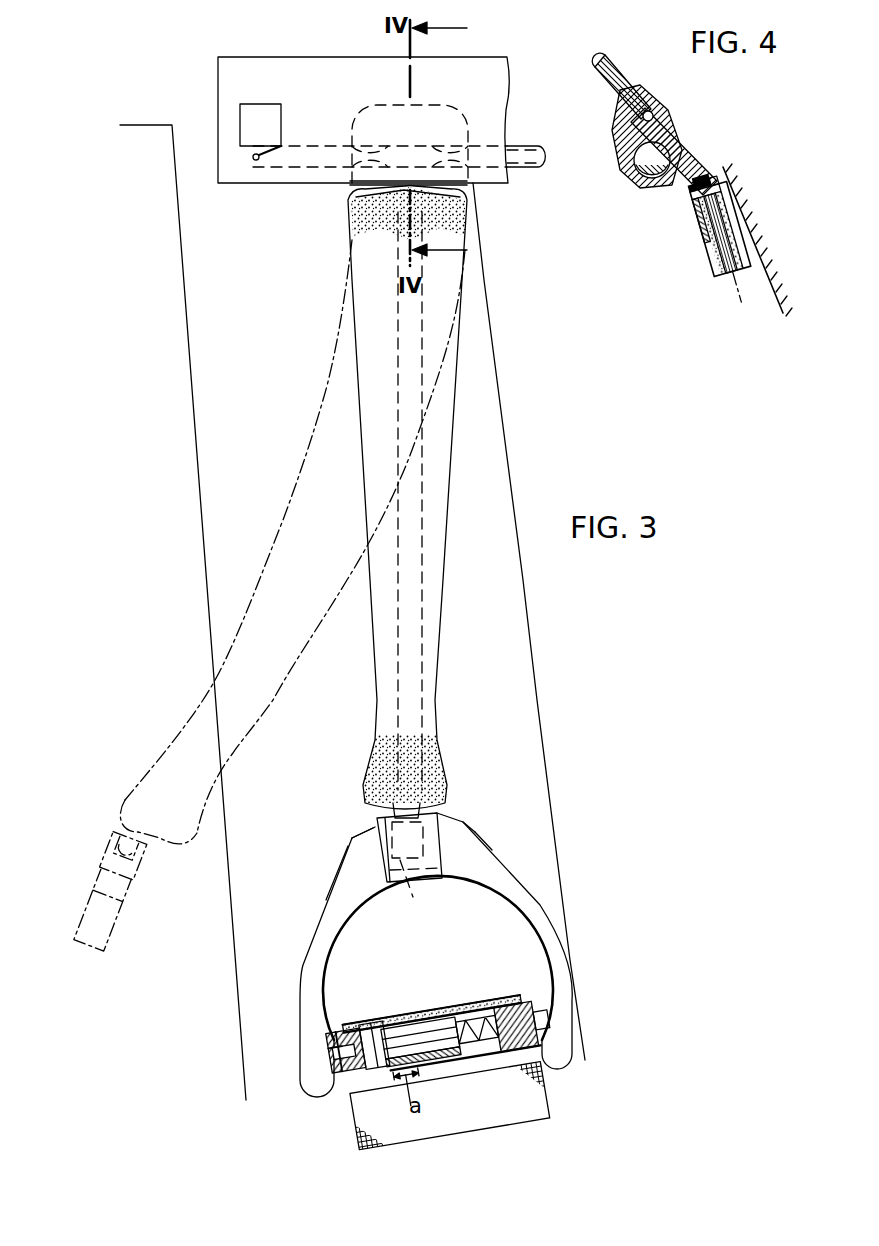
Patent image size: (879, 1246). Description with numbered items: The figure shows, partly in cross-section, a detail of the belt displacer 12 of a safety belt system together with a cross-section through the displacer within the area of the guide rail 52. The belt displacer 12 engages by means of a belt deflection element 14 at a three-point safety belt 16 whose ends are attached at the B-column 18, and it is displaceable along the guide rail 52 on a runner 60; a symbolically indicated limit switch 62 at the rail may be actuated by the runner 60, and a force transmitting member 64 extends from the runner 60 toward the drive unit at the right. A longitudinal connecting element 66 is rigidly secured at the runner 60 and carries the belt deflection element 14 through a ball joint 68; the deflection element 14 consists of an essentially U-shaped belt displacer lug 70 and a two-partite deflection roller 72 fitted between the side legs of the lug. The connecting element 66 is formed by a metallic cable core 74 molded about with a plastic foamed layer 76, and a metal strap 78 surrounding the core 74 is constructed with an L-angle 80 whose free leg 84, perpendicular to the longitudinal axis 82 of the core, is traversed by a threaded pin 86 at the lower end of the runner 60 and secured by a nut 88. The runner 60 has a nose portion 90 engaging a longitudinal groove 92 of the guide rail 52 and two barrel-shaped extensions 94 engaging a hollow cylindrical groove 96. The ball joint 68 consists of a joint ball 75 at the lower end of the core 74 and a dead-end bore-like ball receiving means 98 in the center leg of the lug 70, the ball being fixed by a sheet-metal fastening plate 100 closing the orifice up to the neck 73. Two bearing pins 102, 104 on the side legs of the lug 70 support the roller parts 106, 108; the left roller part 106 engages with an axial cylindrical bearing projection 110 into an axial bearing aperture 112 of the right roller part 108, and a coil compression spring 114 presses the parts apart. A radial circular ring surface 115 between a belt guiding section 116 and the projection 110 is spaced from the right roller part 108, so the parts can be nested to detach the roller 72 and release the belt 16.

In FIG. 3, the belt displacer 12 is at (425, 502).
In FIG. 3, the belt deflection element 14 is at (338, 948).
In FIG. 3, the three-point safety belt 16 is at (439, 1106).
In FIG. 3, the B-column 18 is at (509, 482).
In FIG. 4, the B-column 18 is at (772, 316).
In FIG. 3, the guide rail 52 is at (284, 184).
In FIG. 4, the guide rail 52 is at (630, 133).
In FIG. 3, the runner 60 is at (350, 186).
In FIG. 4, the runner 60 is at (680, 145).
In FIG. 3, the limit switch 62 is at (268, 105).
In FIG. 3, the force transmitting member 64 is at (527, 185).
In FIG. 3, the longitudinal connecting element 66 is at (419, 498).
In FIG. 4, the longitudinal connecting element 66 is at (719, 231).
In FIG. 3, the ball joint 68 is at (299, 875).
In FIG. 3, the belt displacer lug 70 is at (556, 918).
In FIG. 3, the two-partite deflection roller 72 is at (548, 1062).
In FIG. 3, the neck 73 is at (418, 812).
In FIG. 3, the cable core 74 is at (424, 601).
In FIG. 4, the cable core 74 is at (740, 262).
In FIG. 3, the joint ball 75 is at (430, 836).
In FIG. 3, the plastic foamed layer 76 is at (447, 441).
In FIG. 4, the plastic foamed layer 76 is at (712, 278).
In FIG. 4, the metal strap 78 is at (730, 222).
In FIG. 4, the L-angle 80 is at (688, 214).
In FIG. 4, the longitudinal axis 82 is at (735, 298).
In FIG. 4, the free leg 84 is at (706, 180).
In FIG. 4, the threaded pin 86 is at (692, 192).
In FIG. 4, the nut 88 is at (722, 190).
In FIG. 4, the nose portion 90 is at (655, 118).
In FIG. 4, the longitudinal groove 92 is at (645, 105).
In FIG. 3, the barrel-shaped extensions 94 is at (373, 125).
In FIG. 4, the barrel-shaped extensions 94 is at (642, 178).
In FIG. 4, the hollow cylindrical groove 96 is at (629, 177).
In FIG. 3, the ball receiving means 98 is at (108, 818).
In FIG. 3, the sheet-metal fastening plate 100 is at (388, 850).
In FIG. 3, the bearing pin 102 is at (344, 1032).
In FIG. 3, the bearing pin 104 is at (548, 1018).
In FIG. 3, the left roller part 106 is at (376, 1024).
In FIG. 3, the right roller part 108 is at (465, 1004).
In FIG. 3, the axial cylindrical bearing projection 110 is at (428, 1034).
In FIG. 3, the axial bearing aperture 112 is at (478, 1046).
In FIG. 3, the coil compression spring 114 is at (502, 1006).
In FIG. 3, the radial circular ring surface 115 is at (396, 1020).
In FIG. 3, the belt guiding section 116 is at (342, 1068).